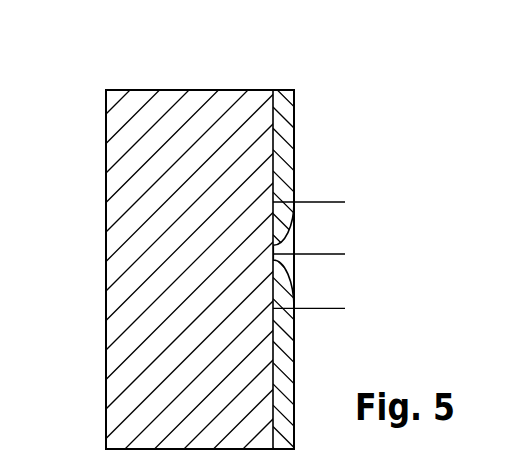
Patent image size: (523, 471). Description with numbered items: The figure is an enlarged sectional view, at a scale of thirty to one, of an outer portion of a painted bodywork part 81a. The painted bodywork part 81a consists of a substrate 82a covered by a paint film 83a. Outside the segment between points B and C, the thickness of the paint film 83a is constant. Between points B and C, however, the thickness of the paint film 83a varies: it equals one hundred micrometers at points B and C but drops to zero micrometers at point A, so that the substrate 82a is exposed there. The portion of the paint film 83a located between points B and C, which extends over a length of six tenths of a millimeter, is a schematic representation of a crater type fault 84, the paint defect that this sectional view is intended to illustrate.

The painted bodywork part 81a is at (192, 63).
The substrate 82a is at (133, 157).
The paint film 83a is at (294, 152).
The crater type fault 84 is at (375, 202).